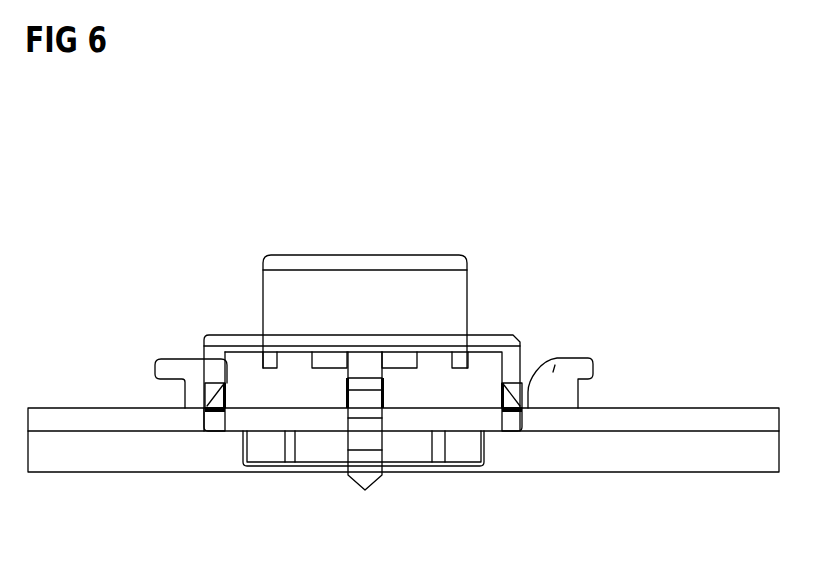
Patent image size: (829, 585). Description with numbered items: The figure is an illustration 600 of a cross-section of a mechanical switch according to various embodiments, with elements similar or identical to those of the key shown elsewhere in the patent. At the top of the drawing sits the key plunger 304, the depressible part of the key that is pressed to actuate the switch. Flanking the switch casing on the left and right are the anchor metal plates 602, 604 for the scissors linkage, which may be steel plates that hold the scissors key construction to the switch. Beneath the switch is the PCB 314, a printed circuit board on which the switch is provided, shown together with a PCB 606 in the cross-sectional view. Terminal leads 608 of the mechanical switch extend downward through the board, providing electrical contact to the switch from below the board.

The illustration of a cross-section of a mechanical switch 600 is at (731, 107).
The key plunger 304 is at (448, 302).
The anchor metal plate 602 is at (170, 359).
The anchor metal plate 604 is at (556, 368).
The terminal leads 608 is at (364, 480).
The PCB 314 is at (668, 418).
The PCB 606 is at (632, 452).